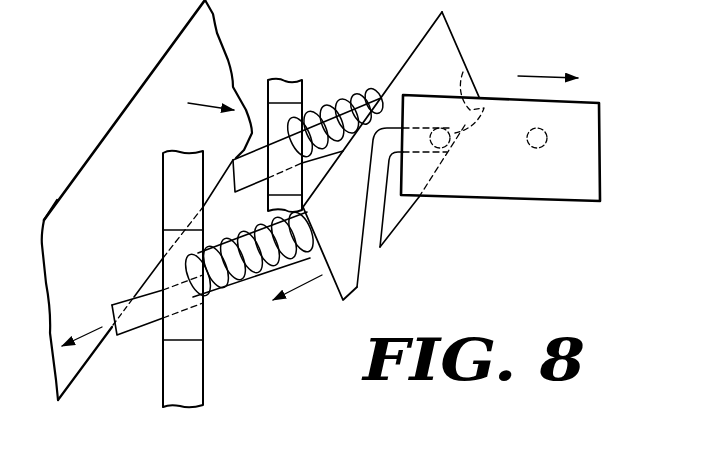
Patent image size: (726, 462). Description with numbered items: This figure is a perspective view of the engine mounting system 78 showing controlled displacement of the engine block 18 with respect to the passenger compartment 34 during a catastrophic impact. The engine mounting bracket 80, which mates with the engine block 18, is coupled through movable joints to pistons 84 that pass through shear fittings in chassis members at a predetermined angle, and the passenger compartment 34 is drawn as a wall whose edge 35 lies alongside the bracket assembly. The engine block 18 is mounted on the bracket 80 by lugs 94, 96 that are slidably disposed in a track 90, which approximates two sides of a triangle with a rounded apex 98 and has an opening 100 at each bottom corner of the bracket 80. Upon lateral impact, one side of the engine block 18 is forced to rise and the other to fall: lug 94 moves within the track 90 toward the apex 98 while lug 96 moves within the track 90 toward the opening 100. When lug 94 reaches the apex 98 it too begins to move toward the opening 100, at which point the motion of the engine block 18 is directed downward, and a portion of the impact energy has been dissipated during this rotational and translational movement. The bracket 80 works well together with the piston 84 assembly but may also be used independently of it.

The engine block 18 is at (507, 203).
The passenger compartment 34 is at (80, 55).
The wall edge 35 is at (147, 115).
The engine mounting system 78 is at (197, 103).
The engine mounting bracket 80 is at (422, 66).
The pistons 84 is at (247, 178).
The track 90 is at (377, 210).
The lug 94 is at (453, 141).
The lug 96 is at (545, 146).
The rounded apex 98 is at (367, 163).
The opening 100 is at (464, 69).